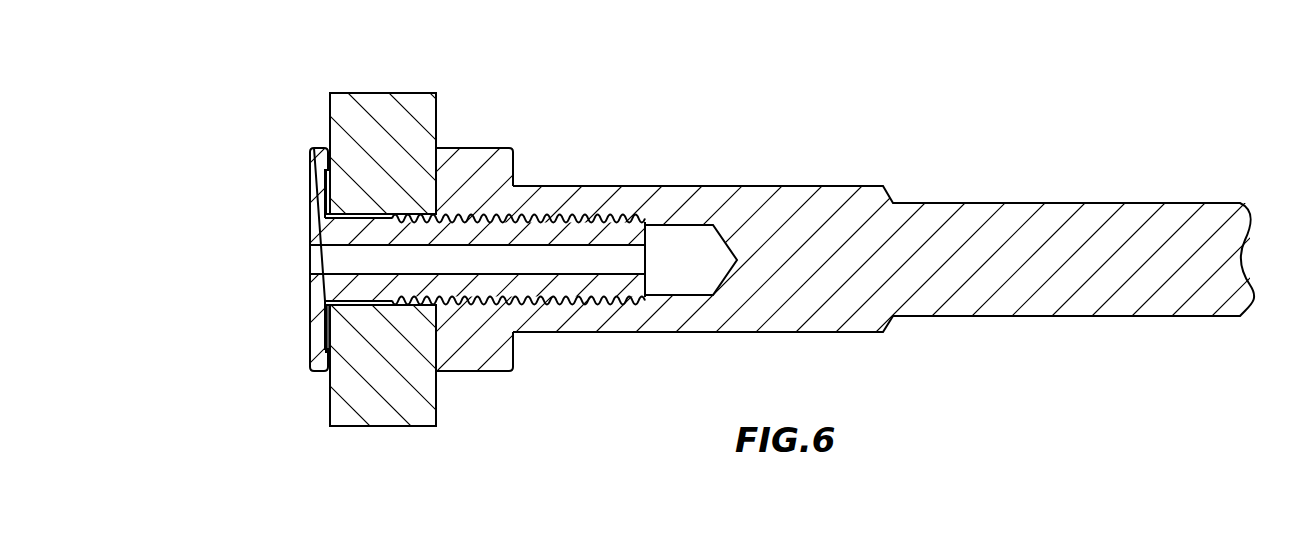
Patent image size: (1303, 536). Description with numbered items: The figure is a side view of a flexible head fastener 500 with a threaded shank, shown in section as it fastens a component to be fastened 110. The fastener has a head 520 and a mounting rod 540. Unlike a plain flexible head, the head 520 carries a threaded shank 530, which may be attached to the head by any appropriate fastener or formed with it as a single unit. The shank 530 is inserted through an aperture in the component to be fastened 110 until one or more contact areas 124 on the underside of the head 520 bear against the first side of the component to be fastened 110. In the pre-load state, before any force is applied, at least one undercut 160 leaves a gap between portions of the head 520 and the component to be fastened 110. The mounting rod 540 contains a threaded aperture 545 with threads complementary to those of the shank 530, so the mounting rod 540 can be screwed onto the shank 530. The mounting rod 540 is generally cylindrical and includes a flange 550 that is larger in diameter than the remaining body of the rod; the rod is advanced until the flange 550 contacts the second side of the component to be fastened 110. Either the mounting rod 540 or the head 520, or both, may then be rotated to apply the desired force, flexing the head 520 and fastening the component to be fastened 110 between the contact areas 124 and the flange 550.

The flexible head fastener 500 is at (984, 80).
The mounting rod 540 is at (672, 187).
The flange 550 is at (472, 350).
The threaded shank 530 is at (523, 283).
The threaded aperture 545 is at (597, 300).
The head 520 is at (313, 163).
The component to be fastened 110 is at (339, 106).
The contact area 124 is at (330, 163).
The undercut 160 is at (329, 322).